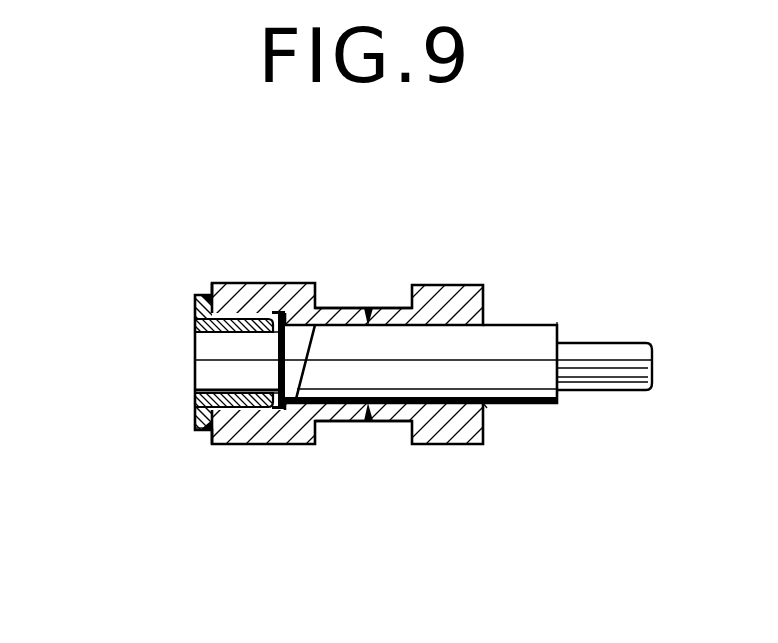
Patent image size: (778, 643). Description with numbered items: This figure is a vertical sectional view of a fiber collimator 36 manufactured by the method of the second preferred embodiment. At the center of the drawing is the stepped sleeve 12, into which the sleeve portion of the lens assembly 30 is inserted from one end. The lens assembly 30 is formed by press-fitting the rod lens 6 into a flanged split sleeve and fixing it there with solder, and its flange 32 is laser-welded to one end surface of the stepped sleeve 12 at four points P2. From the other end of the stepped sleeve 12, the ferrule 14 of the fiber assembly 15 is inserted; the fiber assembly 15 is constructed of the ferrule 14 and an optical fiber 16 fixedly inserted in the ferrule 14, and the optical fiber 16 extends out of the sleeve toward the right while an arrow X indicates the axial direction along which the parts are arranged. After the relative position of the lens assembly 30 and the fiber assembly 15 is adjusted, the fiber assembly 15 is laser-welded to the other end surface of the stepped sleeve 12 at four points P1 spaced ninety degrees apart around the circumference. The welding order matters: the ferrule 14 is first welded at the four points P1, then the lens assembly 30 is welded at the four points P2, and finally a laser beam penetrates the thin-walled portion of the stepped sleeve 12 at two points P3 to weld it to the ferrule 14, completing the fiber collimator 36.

The rod lens 6 is at (196, 366).
The stepped sleeve 12 is at (448, 286).
The ferrule 14 is at (525, 335).
The fiber assembly 15 is at (560, 320).
The optical fiber 16 is at (622, 357).
The lens assembly 30 is at (177, 322).
The flange 32 is at (194, 303).
The fiber collimator 36 is at (342, 300).
The welding points P1 is at (488, 410).
The welding points P2 is at (200, 435).
The welding points P3 is at (364, 425).
The direction X is at (150, 360).